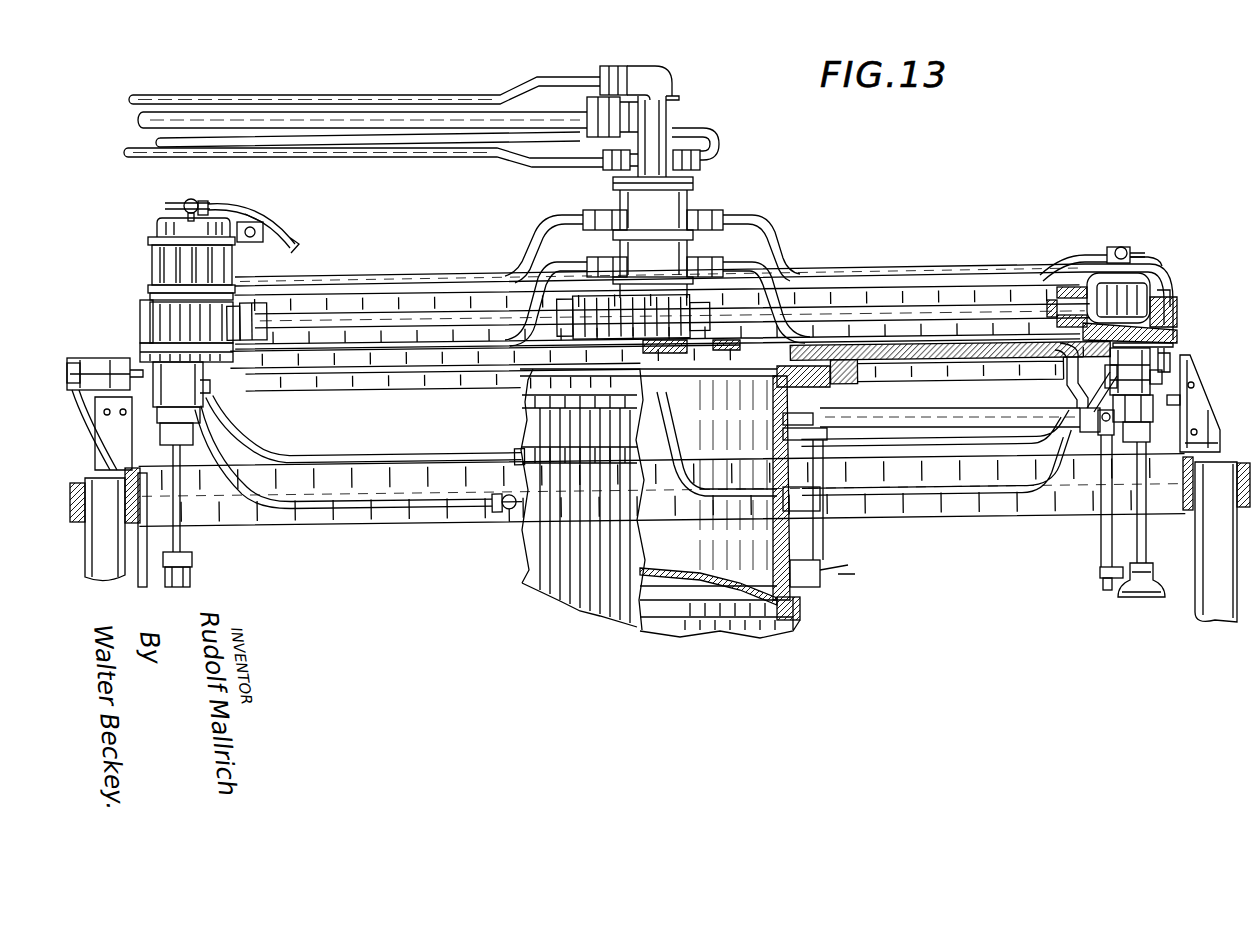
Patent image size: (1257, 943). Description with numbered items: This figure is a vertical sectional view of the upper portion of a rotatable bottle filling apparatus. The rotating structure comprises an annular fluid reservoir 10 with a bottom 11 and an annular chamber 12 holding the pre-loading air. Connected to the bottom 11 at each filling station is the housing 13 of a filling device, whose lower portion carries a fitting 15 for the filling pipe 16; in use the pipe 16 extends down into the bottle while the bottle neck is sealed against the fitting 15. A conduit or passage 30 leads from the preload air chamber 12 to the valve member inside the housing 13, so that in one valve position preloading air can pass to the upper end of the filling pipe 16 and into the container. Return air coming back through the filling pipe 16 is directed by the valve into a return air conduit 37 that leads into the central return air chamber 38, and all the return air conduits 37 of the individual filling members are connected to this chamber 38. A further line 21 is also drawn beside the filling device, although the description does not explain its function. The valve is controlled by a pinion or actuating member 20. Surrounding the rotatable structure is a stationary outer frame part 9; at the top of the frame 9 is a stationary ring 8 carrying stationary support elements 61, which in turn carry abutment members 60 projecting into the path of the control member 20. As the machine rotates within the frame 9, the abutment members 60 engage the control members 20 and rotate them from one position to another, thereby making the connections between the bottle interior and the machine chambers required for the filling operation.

The stationary ring 8 is at (356, 522).
The stationary outer frame part 9 is at (95, 549).
The annular fluid reservoir 10 is at (1152, 262).
The bottom 11 is at (1178, 313).
The annular chamber 12 is at (1172, 289).
The housing 13 is at (1150, 411).
The fitting 15 is at (1135, 438).
The filling pipe 16 is at (1140, 528).
The pinion or actuating member 20 is at (1172, 353).
The pipe 21 is at (1078, 394).
The conduit or passage 30 is at (1177, 339).
The return air conduit 37 is at (412, 455).
The central return air chamber 38 is at (640, 524).
The abutment member 60 is at (124, 360).
The stationary support element 61 is at (1208, 412).